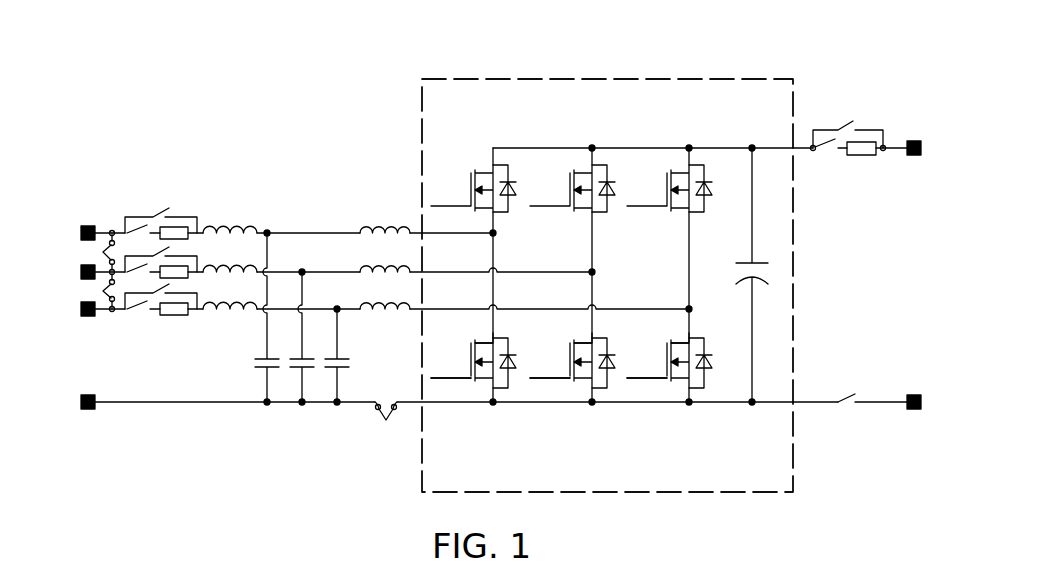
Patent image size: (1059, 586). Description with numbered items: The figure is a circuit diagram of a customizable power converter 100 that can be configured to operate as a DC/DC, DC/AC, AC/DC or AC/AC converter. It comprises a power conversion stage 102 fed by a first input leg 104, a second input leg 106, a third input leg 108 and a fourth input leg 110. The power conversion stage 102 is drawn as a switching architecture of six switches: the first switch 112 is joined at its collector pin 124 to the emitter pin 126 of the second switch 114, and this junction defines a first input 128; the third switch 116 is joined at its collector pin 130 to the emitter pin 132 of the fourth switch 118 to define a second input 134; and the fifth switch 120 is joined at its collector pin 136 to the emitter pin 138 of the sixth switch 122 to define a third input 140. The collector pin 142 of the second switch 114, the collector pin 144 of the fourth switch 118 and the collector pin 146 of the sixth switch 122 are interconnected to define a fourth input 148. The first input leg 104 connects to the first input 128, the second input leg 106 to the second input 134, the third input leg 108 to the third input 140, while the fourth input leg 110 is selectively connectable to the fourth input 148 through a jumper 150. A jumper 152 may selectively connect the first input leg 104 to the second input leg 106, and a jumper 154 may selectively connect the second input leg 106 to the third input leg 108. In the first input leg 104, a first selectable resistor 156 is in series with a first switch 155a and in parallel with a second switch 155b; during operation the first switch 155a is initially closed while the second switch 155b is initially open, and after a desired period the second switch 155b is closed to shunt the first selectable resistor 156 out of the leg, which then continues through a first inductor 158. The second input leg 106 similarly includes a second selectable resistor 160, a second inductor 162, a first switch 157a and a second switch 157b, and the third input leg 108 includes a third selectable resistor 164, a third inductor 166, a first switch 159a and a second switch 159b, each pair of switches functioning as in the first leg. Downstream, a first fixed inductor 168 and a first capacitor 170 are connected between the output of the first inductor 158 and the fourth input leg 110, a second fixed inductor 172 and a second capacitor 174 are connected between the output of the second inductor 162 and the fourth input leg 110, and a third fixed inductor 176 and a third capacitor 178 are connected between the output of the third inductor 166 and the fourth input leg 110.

The customizable power converter 100 is at (697, 61).
The power conversion stage 102 is at (794, 455).
The first input leg 104 is at (84, 222).
The second input leg 106 is at (82, 276).
The third input leg 108 is at (84, 314).
The fourth input leg 110 is at (86, 412).
The first switch 112 is at (510, 145).
The second switch 114 is at (507, 392).
The third switch 116 is at (607, 145).
The fourth switch 118 is at (605, 392).
The fifth switch 120 is at (705, 145).
The sixth switch 122 is at (703, 392).
The collector pin 124 is at (497, 217).
The emitter pin 126 is at (497, 333).
The first input 128 is at (497, 236).
The collector pin 130 is at (596, 216).
The emitter pin 132 is at (596, 333).
The second input 134 is at (588, 276).
The collector pin 136 is at (693, 218).
The emitter pin 138 is at (697, 335).
The third input 140 is at (686, 307).
The collector pin 142 is at (475, 386).
The collector pin 144 is at (575, 386).
The collector pin 146 is at (672, 386).
The fourth input 148 is at (492, 408).
The jumper 150 is at (385, 424).
The jumper 152 is at (112, 230).
The jumper 154 is at (112, 313).
The first switch 155a is at (135, 226).
The second switch 155b is at (157, 214).
The first selectable resistor 156 is at (178, 225).
The first switch 157a is at (103, 254).
The second switch 157b is at (106, 247).
The first inductor 158 is at (226, 264).
The first switch 159a is at (108, 300).
The second switch 159b is at (106, 287).
The second selectable resistor 160 is at (208, 304).
The second inductor 162 is at (220, 229).
The third selectable resistor 164 is at (178, 318).
The third inductor 166 is at (227, 314).
The first fixed inductor 168 is at (381, 229).
The first capacitor 170 is at (261, 407).
The second fixed inductor 172 is at (364, 266).
The second capacitor 174 is at (316, 410).
The third fixed inductor 176 is at (388, 303).
The third capacitor 178 is at (343, 407).